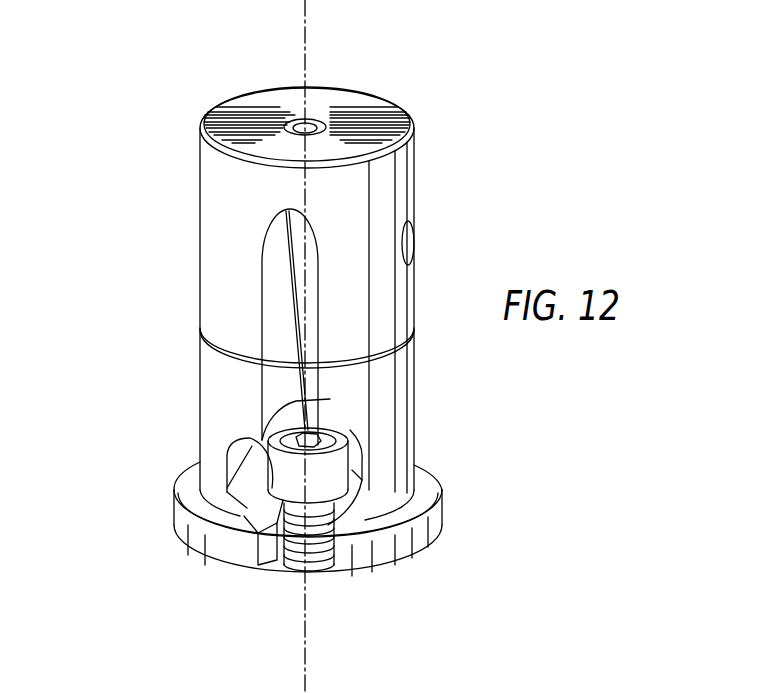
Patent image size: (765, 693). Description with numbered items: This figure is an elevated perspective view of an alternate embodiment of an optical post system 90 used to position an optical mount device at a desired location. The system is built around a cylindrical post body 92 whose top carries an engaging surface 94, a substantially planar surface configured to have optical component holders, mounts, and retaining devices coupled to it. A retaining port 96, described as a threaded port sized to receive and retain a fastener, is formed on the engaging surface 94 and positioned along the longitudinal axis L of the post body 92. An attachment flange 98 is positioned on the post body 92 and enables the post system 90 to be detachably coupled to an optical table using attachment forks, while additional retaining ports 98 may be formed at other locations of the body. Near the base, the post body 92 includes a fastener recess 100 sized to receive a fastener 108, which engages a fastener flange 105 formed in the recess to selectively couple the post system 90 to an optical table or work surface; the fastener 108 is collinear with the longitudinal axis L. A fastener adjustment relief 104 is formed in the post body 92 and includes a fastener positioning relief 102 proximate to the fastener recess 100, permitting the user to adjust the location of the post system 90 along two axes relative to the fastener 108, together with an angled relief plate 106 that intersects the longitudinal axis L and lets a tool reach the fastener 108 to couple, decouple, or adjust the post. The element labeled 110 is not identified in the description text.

The longitudinal axis L is at (305, 63).
The optical post system 90 is at (472, 180).
The post body 92 is at (235, 241).
The engaging surface 94 is at (253, 118).
The retaining port 96 is at (312, 127).
The attachment flange 98 is at (417, 243).
The fastener recess 100 is at (273, 562).
The fastener positioning relief 102 is at (250, 490).
The fastener adjustment relief 104 is at (283, 313).
The fastener flange 105 is at (258, 518).
The angled relief plate 106 is at (298, 345).
The fastener 108 is at (290, 554).
The flange 110 is at (423, 480).